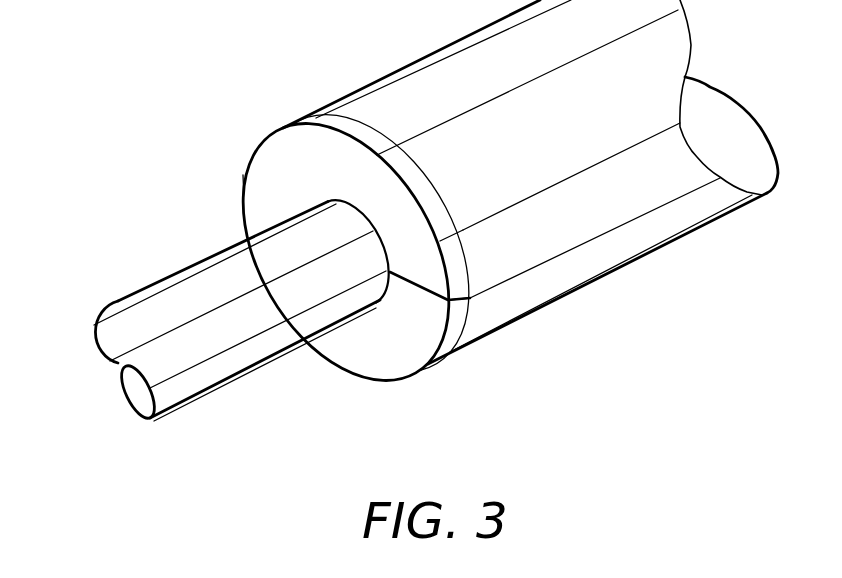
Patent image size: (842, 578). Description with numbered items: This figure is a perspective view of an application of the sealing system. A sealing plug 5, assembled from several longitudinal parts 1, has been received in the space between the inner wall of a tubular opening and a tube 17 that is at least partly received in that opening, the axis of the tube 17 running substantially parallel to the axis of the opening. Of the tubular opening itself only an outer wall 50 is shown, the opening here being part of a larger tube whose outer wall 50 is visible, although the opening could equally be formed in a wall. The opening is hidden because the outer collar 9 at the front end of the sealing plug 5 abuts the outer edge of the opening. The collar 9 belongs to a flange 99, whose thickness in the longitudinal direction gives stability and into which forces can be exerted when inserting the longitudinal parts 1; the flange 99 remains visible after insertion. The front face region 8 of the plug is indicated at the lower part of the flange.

The longitudinal part 1 is at (460, 220).
The sealing plug 5 is at (243, 197).
The front face of flange 8 is at (408, 352).
The outer collar 9 is at (452, 332).
The tube 17 is at (130, 297).
The outer wall 50 is at (589, 216).
The flange 99 is at (243, 175).